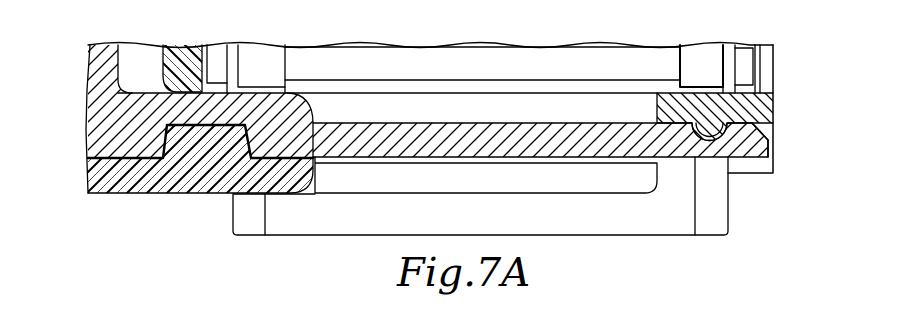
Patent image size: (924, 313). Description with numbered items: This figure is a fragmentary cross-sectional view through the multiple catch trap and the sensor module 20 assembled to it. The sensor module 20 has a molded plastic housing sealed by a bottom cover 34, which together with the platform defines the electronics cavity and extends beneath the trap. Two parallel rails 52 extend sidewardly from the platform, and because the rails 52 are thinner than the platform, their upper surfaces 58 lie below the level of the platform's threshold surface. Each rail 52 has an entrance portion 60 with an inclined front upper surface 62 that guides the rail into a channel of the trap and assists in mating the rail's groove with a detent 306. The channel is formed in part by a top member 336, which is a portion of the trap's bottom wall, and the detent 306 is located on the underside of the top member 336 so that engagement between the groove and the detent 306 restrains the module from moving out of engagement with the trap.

The sensor module 20 is at (92, 119).
The bottom cover 34 is at (175, 194).
The rails 52 is at (372, 160).
The upper surfaces of the rails 58 is at (400, 123).
The entrance portion 60 is at (752, 158).
The inclined front upper surface 62 is at (776, 139).
The detent 306 is at (711, 158).
The top member 336 is at (765, 129).